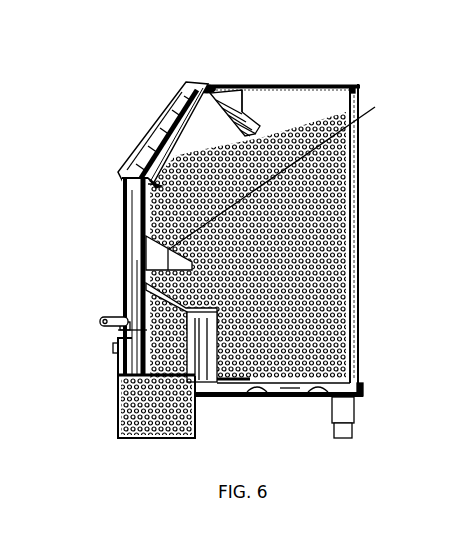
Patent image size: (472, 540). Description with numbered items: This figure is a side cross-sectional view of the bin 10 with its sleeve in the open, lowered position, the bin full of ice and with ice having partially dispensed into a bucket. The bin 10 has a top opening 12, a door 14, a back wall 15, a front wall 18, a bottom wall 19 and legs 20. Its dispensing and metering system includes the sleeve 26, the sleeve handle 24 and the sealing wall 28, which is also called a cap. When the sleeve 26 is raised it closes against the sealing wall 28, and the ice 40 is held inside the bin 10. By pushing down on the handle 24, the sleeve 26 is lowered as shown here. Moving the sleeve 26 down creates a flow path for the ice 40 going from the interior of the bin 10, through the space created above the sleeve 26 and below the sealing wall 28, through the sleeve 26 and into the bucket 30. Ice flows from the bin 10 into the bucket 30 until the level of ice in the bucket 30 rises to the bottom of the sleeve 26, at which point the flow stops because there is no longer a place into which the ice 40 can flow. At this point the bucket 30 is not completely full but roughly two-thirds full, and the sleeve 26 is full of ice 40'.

The bin 10 is at (364, 85).
The top opening 12 is at (258, 82).
The door 14 is at (151, 128).
The back wall 15 is at (367, 232).
The front wall 18 is at (121, 241).
The bottom wall 19 is at (297, 398).
The legs 20 is at (340, 415).
The sleeve handle 24 is at (103, 320).
The sleeve 26 is at (128, 316).
The sealing wall 28 is at (375, 107).
The bucket 30 is at (117, 383).
The ice 40 is at (295, 245).
The ice 40' is at (187, 414).